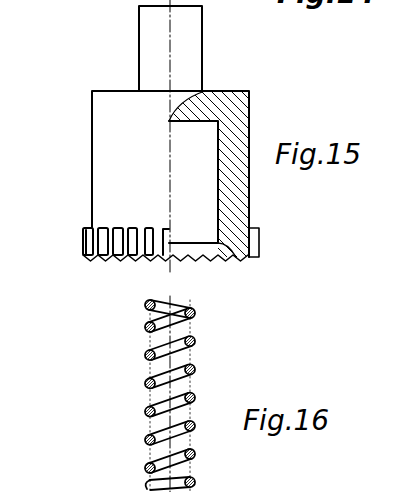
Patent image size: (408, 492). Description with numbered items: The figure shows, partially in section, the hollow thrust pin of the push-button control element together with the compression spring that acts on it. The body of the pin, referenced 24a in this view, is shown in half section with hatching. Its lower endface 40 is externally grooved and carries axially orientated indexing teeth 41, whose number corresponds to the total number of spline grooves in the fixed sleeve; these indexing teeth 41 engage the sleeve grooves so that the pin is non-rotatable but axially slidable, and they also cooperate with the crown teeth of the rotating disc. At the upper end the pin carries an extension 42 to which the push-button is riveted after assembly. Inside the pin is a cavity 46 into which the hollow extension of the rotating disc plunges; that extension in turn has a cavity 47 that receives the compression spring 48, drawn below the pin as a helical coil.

In FIG. 15, the cutter body 24a is at (236, 107).
In FIG. 15, the endface 40 is at (105, 258).
In FIG. 15, the indexing teeth 41 is at (80, 247).
In FIG. 15, the extension 42 is at (152, 47).
In FIG. 15, the cavity 46 is at (198, 218).
In FIG. 16, the cavity 47 is at (241, 488).
In FIG. 16, the compression spring 48 is at (145, 412).